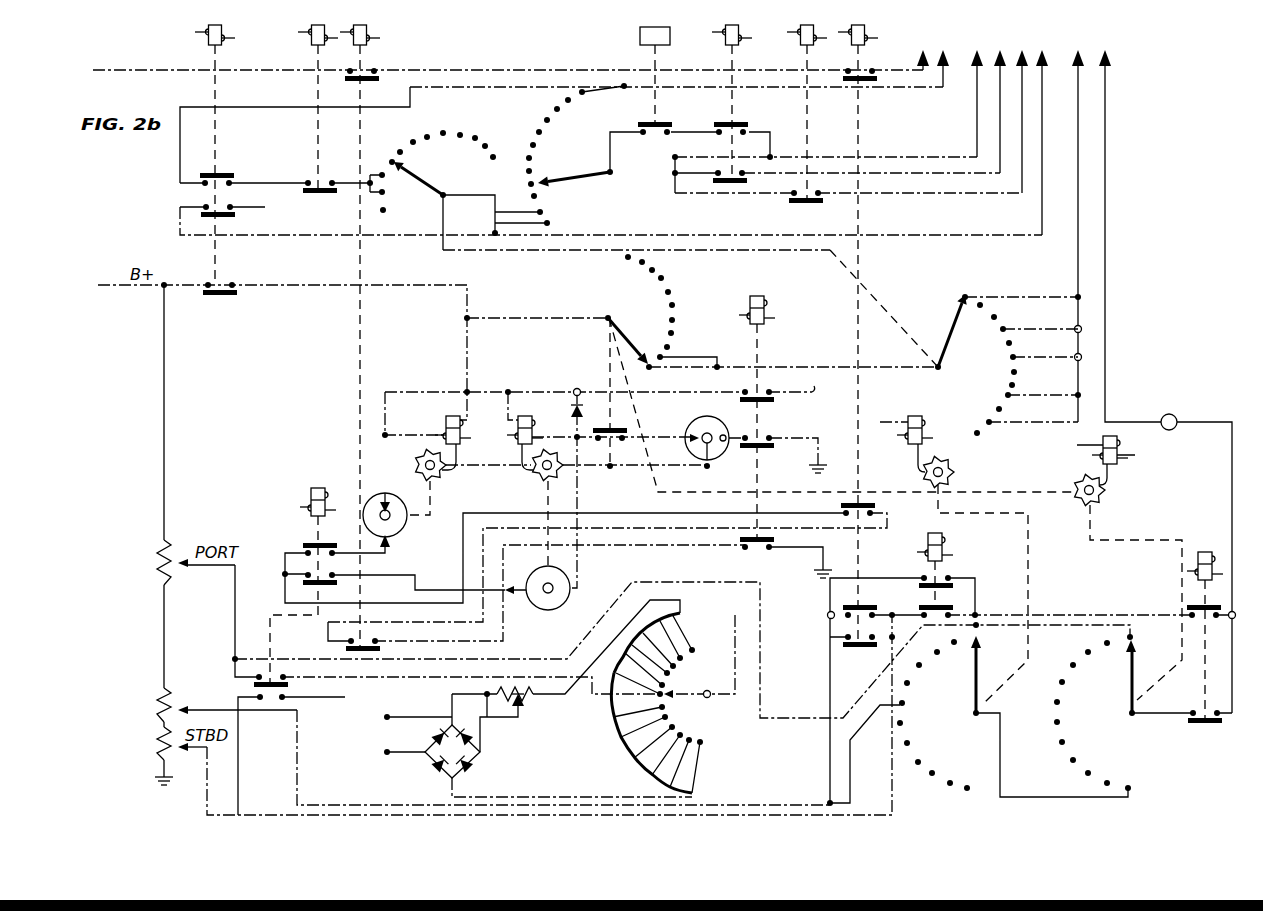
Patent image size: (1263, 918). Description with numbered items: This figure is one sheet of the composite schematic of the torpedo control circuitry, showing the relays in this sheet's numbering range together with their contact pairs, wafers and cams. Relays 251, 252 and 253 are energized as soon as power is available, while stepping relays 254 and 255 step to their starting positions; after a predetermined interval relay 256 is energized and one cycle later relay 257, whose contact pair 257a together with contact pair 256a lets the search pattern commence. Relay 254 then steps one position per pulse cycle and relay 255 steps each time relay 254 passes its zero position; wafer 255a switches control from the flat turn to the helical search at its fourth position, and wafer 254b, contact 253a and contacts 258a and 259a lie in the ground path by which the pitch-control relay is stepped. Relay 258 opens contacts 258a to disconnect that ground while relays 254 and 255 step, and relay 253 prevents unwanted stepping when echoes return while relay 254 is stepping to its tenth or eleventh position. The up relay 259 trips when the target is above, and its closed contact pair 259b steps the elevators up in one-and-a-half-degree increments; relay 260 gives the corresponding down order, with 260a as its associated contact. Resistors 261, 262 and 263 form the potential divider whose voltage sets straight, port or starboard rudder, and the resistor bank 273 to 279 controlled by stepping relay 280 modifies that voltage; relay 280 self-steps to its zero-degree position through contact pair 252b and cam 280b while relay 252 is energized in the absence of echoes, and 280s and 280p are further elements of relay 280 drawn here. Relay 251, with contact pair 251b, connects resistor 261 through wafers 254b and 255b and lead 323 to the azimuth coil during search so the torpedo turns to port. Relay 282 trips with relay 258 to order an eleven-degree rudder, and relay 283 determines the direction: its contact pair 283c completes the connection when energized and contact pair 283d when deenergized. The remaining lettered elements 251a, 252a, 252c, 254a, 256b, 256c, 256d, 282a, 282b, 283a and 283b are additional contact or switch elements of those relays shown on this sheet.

The relay 251 is at (1207, 542).
The relay contact 251a is at (1188, 607).
The contact pair 251b is at (1192, 702).
The relay 252 is at (770, 310).
The relay contact 252a is at (766, 385).
The contact pair 252b is at (768, 433).
The relay contact 252c is at (759, 553).
The relay 253 is at (313, 49).
The contact 253a is at (326, 198).
The relay 254 is at (902, 428).
The stepping switch wiper 254a is at (947, 337).
The wafer 254b is at (425, 188).
The relay 255 is at (1132, 476).
The wafer switch 255a is at (537, 131).
The wafer 255b is at (1128, 706).
The relay 256 is at (878, 36).
The contact pair 256a is at (870, 80).
The relay contact 256b is at (862, 506).
The relay contact 256c is at (872, 604).
The relay contact 256d is at (845, 640).
The relay 257 is at (386, 50).
The contact pair 257a is at (378, 72).
The relay 258 is at (632, 38).
The contacts 258a is at (648, 125).
The up relay 259 is at (722, 39).
The contact 259a is at (745, 125).
The contact pair 259b is at (714, 186).
The relay 260 is at (798, 39).
The relay contact 260a is at (800, 203).
The resistor 261 is at (162, 557).
The resistor 262 is at (162, 699).
The resistor 263 is at (162, 747).
The resistor bank 273 is at (690, 792).
The resistor bank 279 is at (684, 616).
The relay 280 is at (503, 493).
The stepping coil 280s is at (447, 425).
The stepping coil 280p is at (556, 413).
The cam 280b is at (606, 315).
The relay 282 is at (960, 551).
The relay contact 282a is at (945, 577).
The relay contact 282b is at (950, 608).
The relay 283 is at (296, 502).
The relay contact 283a is at (303, 548).
The relay contact 283b is at (303, 588).
The contact pair 283c is at (258, 676).
The contact pair 283d is at (258, 701).
The lead 323 is at (1175, 415).